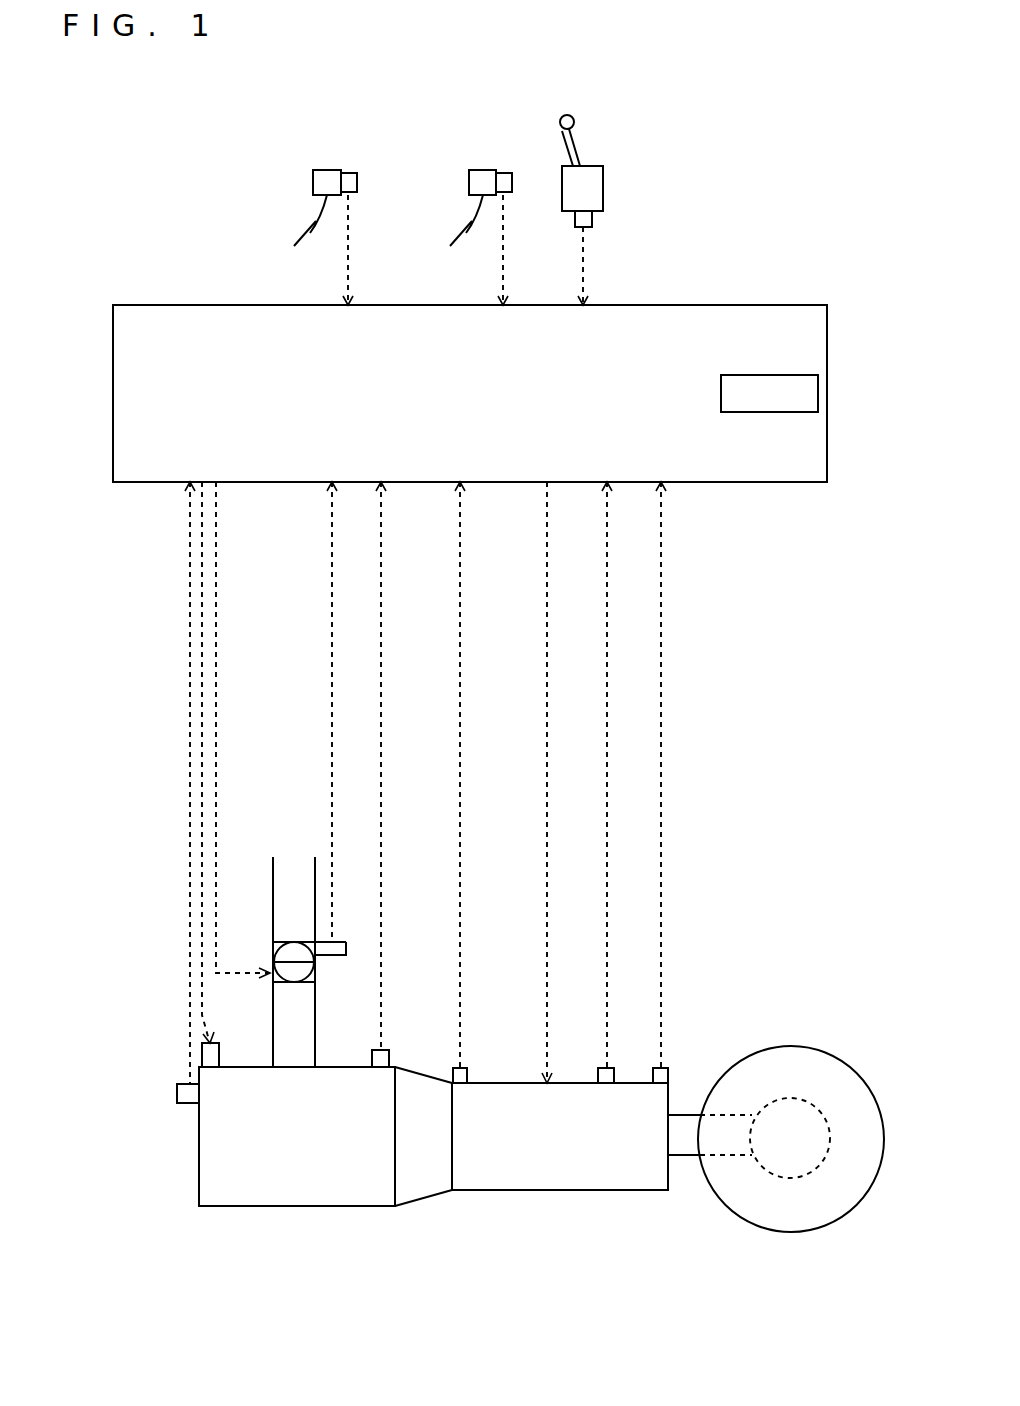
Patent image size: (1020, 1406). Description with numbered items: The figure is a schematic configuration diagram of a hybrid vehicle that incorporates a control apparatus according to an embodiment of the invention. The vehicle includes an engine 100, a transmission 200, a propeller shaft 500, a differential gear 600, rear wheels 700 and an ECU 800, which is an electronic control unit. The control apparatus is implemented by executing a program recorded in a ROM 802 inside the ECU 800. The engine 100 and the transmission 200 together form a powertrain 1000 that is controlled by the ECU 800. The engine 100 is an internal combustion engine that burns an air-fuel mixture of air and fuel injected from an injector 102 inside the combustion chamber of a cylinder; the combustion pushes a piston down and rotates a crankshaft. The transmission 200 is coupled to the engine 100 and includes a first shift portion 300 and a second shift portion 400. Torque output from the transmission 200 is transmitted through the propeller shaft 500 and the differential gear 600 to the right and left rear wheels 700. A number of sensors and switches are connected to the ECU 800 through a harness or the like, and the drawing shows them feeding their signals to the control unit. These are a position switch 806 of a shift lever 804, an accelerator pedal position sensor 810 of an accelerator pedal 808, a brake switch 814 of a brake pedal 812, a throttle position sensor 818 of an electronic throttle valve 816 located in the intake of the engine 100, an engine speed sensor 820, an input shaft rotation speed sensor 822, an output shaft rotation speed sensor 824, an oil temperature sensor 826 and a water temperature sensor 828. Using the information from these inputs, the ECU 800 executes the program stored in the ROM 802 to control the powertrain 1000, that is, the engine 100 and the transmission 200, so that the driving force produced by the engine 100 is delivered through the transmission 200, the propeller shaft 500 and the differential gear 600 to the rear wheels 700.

The engine 100 is at (297, 1207).
The injector 102 is at (222, 1043).
The transmission 200 is at (533, 1295).
The first shift portion 300 is at (433, 1193).
The second shift portion 400 is at (545, 1190).
The propeller shaft 500 is at (688, 1160).
The differential gear 600 is at (808, 1100).
The rear wheels 700 is at (792, 1233).
The ECU 800 is at (172, 305).
The ROM 802 is at (773, 375).
The shift lever 804 is at (588, 145).
The position switch 806 is at (592, 220).
The accelerator pedal 808 is at (470, 198).
The accelerator pedal position sensor 810 is at (501, 172).
The brake pedal 812 is at (312, 198).
The brake switch 814 is at (346, 172).
The electronic throttle valve 816 is at (268, 945).
The throttle position sensor 818 is at (326, 955).
The engine speed sensor 820 is at (177, 1093).
The input shaft rotation speed sensor 822 is at (468, 1078).
The output shaft rotation speed sensor 824 is at (670, 1078).
The oil temperature sensor 826 is at (600, 1070).
The water temperature sensor 828 is at (388, 1050).
The powertrain 1000 is at (382, 1251).